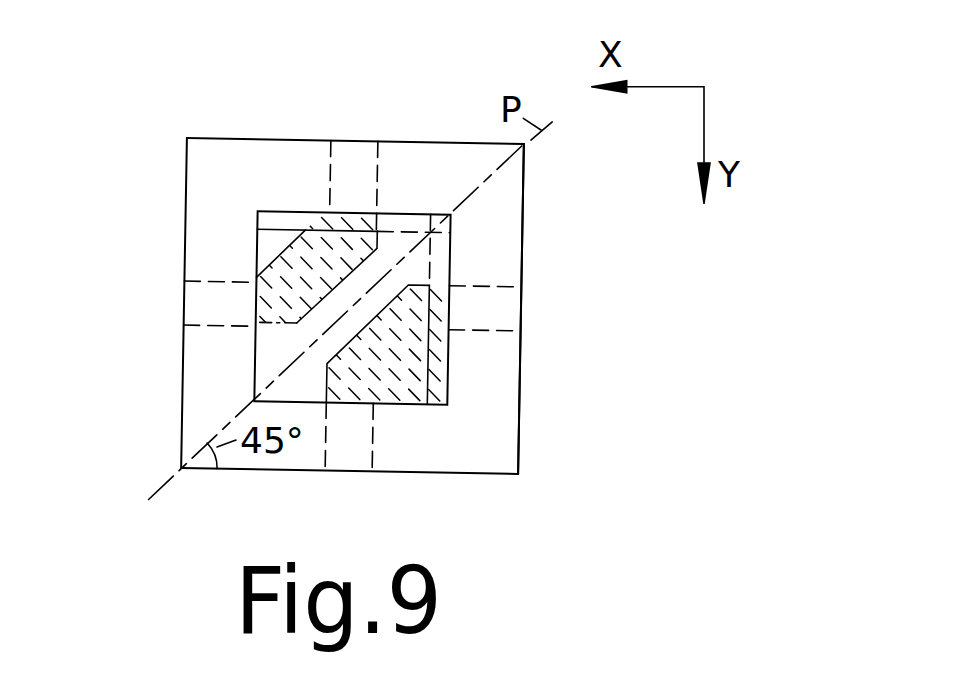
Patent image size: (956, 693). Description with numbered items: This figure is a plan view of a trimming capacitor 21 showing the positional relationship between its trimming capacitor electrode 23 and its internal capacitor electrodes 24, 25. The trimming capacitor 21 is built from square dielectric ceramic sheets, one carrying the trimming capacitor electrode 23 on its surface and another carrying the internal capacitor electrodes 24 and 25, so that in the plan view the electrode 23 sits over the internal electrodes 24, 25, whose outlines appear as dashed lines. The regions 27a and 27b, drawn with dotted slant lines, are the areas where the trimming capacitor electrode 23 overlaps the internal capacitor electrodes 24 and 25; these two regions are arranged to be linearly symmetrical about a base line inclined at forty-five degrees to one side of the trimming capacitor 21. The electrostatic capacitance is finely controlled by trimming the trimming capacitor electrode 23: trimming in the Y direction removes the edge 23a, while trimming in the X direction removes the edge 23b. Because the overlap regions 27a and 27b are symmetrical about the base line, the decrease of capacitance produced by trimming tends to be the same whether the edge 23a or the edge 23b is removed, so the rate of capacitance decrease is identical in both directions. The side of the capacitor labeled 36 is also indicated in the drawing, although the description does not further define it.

The trimming capacitor 21 is at (101, 246).
The trimming capacitor electrode 23 is at (263, 365).
The edge 23a is at (420, 212).
The edge 23b is at (447, 375).
The internal capacitor electrode 24 is at (330, 170).
The internal capacitor electrode 25 is at (353, 460).
The region 27a is at (323, 227).
The region 27b is at (392, 376).
The side surface 36 is at (512, 217).